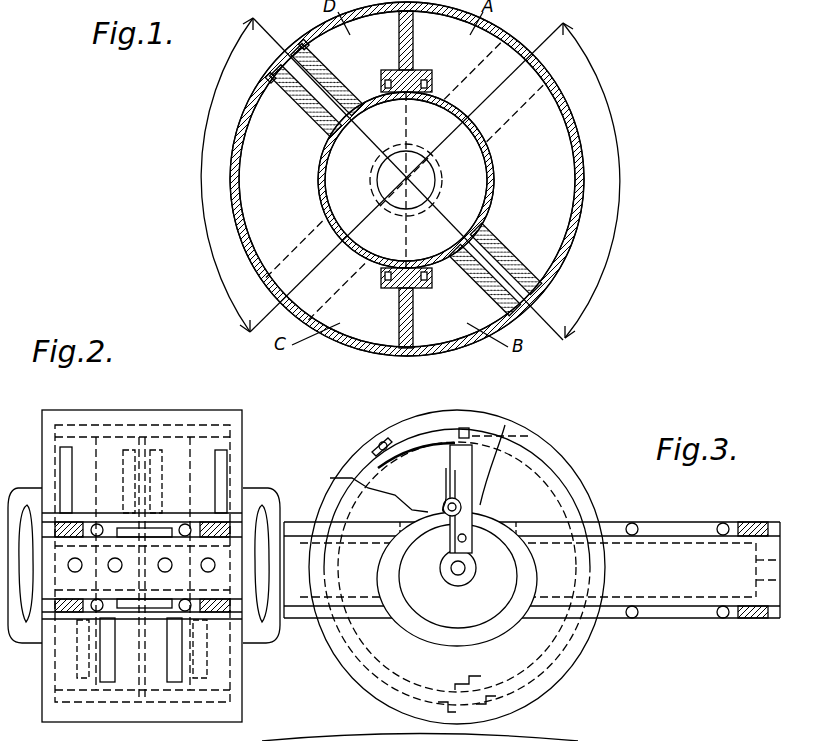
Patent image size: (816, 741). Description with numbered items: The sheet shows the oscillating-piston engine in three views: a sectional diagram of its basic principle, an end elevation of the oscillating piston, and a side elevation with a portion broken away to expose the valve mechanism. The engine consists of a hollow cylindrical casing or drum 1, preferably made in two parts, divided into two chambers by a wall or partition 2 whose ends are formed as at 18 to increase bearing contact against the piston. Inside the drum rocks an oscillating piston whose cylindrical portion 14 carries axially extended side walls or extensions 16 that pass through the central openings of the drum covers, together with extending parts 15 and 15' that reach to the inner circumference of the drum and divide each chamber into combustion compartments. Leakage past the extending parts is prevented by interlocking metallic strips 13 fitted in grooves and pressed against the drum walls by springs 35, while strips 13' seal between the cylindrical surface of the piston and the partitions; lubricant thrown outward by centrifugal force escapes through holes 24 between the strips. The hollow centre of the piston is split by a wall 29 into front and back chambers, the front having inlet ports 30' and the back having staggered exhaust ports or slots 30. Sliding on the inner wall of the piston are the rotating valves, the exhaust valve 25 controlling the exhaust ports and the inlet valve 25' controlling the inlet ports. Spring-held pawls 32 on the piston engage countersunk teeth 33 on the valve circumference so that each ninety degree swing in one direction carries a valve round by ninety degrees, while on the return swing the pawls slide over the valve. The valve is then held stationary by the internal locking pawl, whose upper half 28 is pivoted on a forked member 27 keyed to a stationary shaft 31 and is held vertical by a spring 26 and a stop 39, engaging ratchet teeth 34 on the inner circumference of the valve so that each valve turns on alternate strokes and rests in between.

In FIG. 1, the drum 1 is at (505, 30).
In FIG. 1, the partition 2 is at (415, 52).
In FIG. 1, the interlocking metallic strips 13 is at (286, 42).
In FIG. 2, the interlocking metallic strips 13 is at (101, 596).
In FIG. 3, the interlocking metallic strips 13 is at (700, 572).
In FIG. 1, the strips 13' is at (406, 180).
In FIG. 1, the cylindrical portion 14 is at (493, 168).
In FIG. 2, the cylindrical portion 14 is at (70, 425).
In FIG. 3, the cylindrical portion 14 is at (512, 433).
In FIG. 1, the extending part 15 is at (324, 87).
In FIG. 2, the extending part 15 is at (145, 554).
In FIG. 3, the extending part 15 is at (532, 554).
In FIG. 1, the extending part 15' is at (504, 265).
In FIG. 1, the side walls or extensions 16 is at (437, 168).
In FIG. 2, the side walls or extensions 16 is at (283, 497).
In FIG. 3, the side walls or extensions 16 is at (510, 516).
In FIG. 1, the partition end formation 18 is at (432, 80).
In FIG. 1, the holes 24 is at (526, 296).
In FIG. 2, the holes 24 is at (77, 563).
In FIG. 2, the rotating exhaust valve 25 is at (97, 447).
In FIG. 2, the rotating inlet valve 25' is at (188, 447).
In FIG. 3, the spring 26 is at (442, 487).
In FIG. 3, the forked member 27 is at (466, 548).
In FIG. 3, the locking pawl 28 is at (466, 472).
In FIG. 2, the wall 29 is at (144, 430).
In FIG. 2, the exhaust ports 30 is at (72, 563).
In FIG. 3, the exhaust ports 30 is at (473, 567).
In FIG. 2, the inlet ports 30' is at (215, 563).
In FIG. 3, the stationary shaft 31 is at (460, 568).
In FIG. 3, the pawls 32 is at (384, 444).
In FIG. 3, the countersunk depressions or teeth 33 is at (462, 430).
In FIG. 3, the ratchet teeth 34 is at (486, 437).
In FIG. 3, the springs 35 is at (726, 532).
In FIG. 3, the stop 39 is at (466, 486).